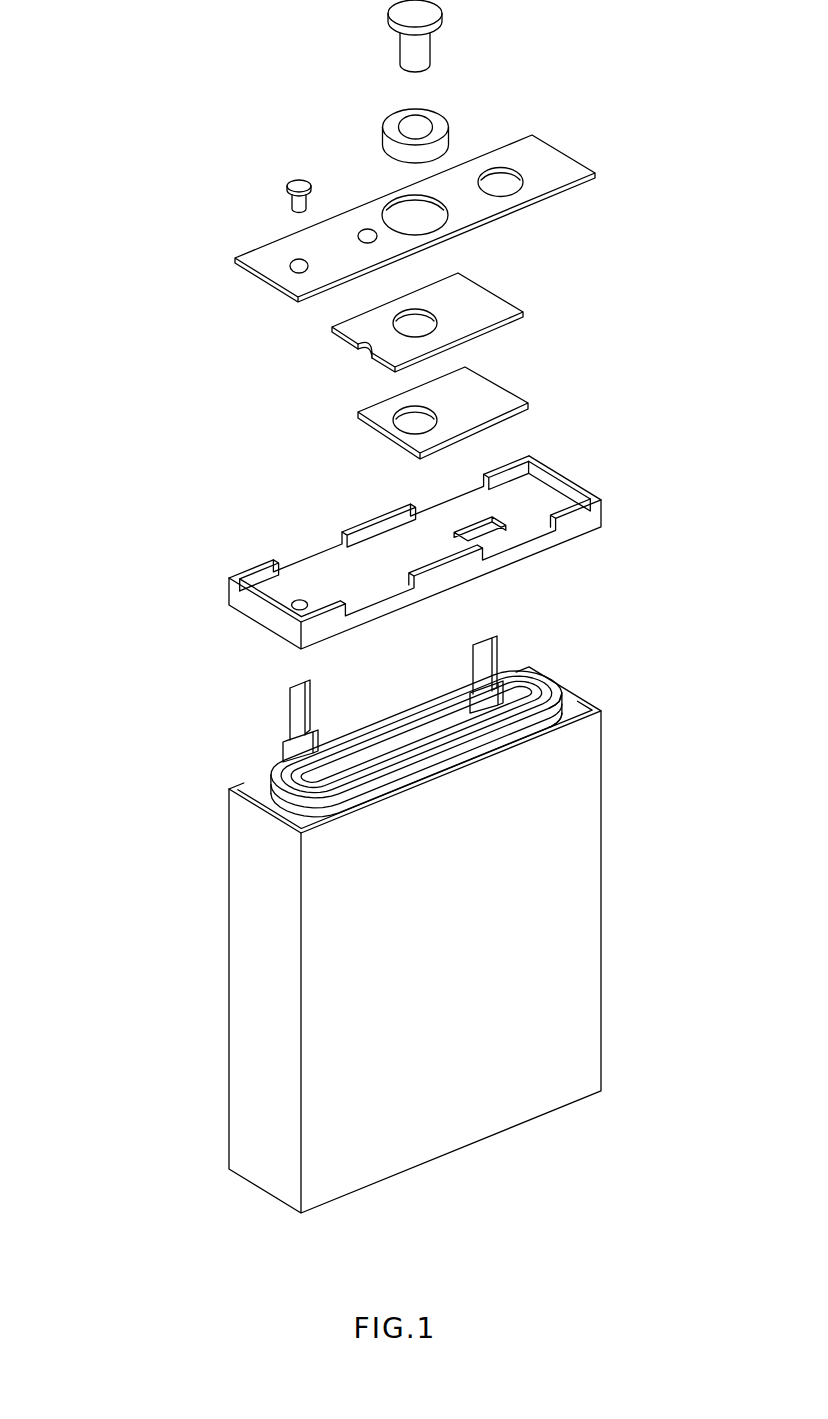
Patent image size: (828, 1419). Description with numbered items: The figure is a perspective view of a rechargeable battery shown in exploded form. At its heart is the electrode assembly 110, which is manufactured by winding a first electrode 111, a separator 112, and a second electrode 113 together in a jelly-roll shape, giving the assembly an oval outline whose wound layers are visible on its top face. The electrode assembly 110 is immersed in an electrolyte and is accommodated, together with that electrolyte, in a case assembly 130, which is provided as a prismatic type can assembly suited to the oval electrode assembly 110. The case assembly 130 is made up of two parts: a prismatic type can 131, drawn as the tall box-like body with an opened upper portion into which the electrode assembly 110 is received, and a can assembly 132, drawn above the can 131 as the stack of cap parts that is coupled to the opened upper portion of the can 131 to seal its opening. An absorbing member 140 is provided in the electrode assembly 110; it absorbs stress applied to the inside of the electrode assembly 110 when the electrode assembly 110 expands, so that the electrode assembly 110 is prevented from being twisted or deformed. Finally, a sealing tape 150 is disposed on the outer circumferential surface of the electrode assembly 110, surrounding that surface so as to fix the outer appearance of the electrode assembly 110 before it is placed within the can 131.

The electrode assembly 110 is at (660, 643).
The first electrode 111 is at (527, 678).
The separator 112 is at (542, 683).
The second electrode 113 is at (557, 683).
The case assembly 130 is at (117, 320).
The can 131 is at (242, 900).
The can assembly 132 is at (213, 633).
The absorbing member 140 is at (573, 697).
The sealing tape 150 is at (550, 727).